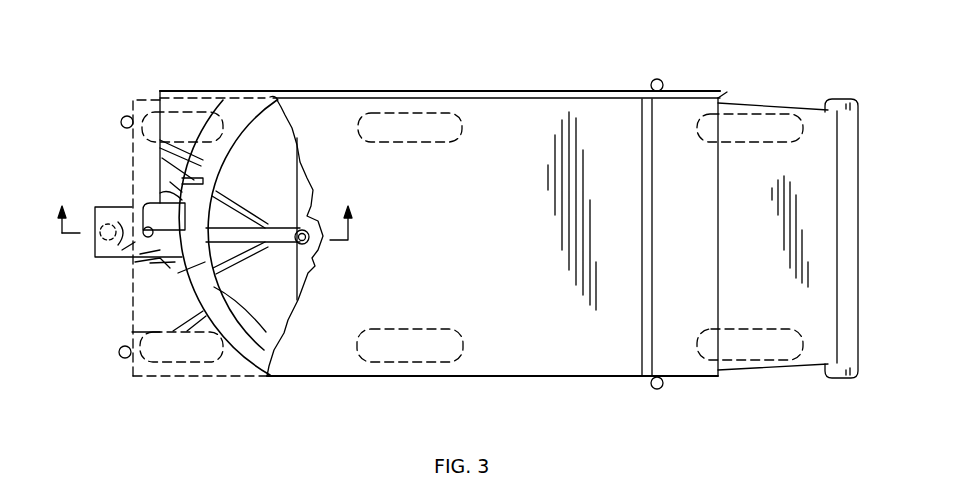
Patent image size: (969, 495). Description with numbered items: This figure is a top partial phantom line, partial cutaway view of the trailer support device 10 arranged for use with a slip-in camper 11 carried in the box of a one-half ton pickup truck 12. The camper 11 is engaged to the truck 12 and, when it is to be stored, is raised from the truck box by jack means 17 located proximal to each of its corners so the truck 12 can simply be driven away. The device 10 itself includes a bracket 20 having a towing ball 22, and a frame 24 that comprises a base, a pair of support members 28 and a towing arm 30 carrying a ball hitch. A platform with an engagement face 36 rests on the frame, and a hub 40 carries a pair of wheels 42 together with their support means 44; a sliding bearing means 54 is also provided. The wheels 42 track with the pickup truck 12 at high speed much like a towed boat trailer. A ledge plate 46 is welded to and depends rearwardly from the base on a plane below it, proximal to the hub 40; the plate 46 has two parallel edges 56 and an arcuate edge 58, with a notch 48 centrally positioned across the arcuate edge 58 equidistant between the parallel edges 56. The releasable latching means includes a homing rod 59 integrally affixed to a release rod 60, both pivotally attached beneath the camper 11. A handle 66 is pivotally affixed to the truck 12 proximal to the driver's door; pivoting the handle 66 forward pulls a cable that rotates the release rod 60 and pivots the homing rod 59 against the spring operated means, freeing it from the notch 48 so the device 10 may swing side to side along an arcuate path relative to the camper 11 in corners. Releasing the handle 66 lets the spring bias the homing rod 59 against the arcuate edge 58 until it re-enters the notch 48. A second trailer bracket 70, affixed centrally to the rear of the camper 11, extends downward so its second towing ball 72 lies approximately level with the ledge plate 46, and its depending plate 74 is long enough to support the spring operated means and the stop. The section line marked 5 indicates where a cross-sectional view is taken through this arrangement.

The trailer support device 10 is at (208, 70).
The slip-in camper 11 is at (603, 197).
The pickup truck 12 is at (797, 163).
The jack means 17 is at (121, 119).
The bracket 20 is at (303, 220).
The towing ball 22 is at (308, 222).
The frame 24 is at (228, 220).
The support members 28 is at (252, 207).
The towing arm 30 is at (273, 240).
The engagement face 36 is at (178, 273).
The hub 40 is at (186, 176).
The wheels 42 is at (132, 115).
The support means 44 is at (158, 143).
The ledge plate 46 is at (150, 263).
The notch 48 is at (137, 217).
The sliding bearing means 54 is at (252, 127).
The parallel edges 56 is at (160, 193).
The arcuate edge 58 is at (140, 254).
The homing rod 59 is at (122, 250).
The release rod 60 is at (158, 98).
The handle 66 is at (722, 95).
The second trailer bracket 70 is at (95, 238).
The second towing ball 72 is at (56, 215).
The depending plate 74 is at (108, 212).
The section line 5- 5 is at (206, 236).